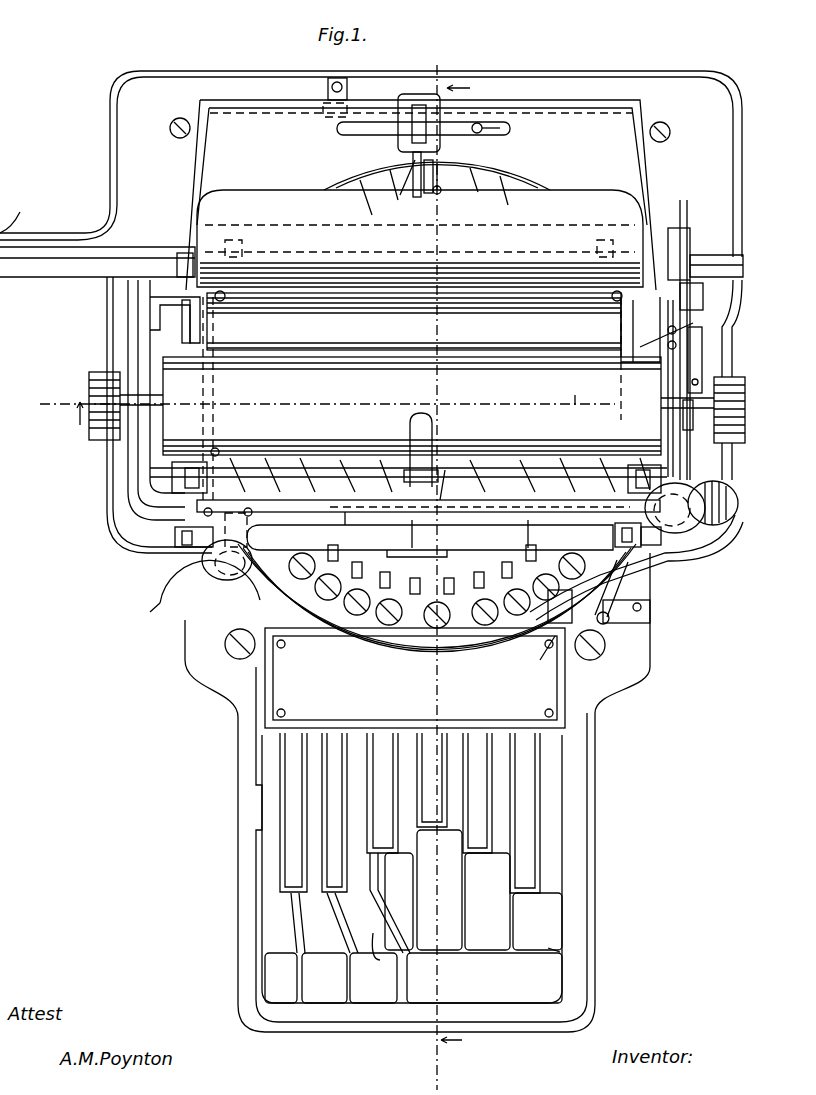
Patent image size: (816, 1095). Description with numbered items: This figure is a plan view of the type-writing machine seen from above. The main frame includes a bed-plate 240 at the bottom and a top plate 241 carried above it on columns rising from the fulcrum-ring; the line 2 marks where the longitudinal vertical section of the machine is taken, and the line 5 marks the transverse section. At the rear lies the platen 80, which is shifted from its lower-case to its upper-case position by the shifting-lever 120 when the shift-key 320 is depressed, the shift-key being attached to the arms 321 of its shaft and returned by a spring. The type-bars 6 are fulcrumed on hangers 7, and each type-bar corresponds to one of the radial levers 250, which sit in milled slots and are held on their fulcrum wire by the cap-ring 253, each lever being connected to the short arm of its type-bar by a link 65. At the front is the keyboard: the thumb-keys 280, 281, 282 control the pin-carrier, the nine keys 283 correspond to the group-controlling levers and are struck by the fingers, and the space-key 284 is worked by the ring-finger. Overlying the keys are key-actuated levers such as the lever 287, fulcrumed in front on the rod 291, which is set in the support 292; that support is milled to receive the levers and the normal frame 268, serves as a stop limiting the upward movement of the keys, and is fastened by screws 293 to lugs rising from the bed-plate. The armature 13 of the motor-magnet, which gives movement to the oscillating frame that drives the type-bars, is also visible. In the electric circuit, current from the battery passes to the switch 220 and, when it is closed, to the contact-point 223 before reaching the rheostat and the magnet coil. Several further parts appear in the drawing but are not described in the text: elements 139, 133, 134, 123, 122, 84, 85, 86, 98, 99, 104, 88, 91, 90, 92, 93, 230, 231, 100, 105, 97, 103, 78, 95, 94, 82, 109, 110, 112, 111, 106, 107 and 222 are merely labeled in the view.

The top plate 241 is at (160, 92).
The section line 2 is at (436, 567).
The carriage housing wall 139 is at (200, 162).
The paper guide rod 133 is at (400, 120).
The guide block 134 is at (428, 117).
The shifting-lever 120 is at (434, 168).
The link 123 is at (405, 172).
The pivot 122 is at (441, 194).
The paper table 84 is at (604, 255).
The carriage rail 85 is at (128, 262).
The rail end 86 is at (2, 232).
The platen knob 98 is at (684, 228).
The bracket 99 is at (690, 243).
The block 104 is at (672, 296).
The platen 80 is at (385, 341).
The platen cylinder 88 is at (268, 352).
The section line 5 is at (313, 406).
The hook 91 is at (180, 324).
The plate 90 is at (195, 345).
The end plate 92 is at (212, 355).
The pin 93 is at (219, 450).
The bracket 230 is at (630, 346).
The pin 231 is at (640, 332).
The arm 100 is at (640, 348).
The pin 105 is at (671, 348).
The bar 97 is at (688, 396).
The lug 103 is at (683, 410).
The ribbon vibrator 78 is at (433, 436).
The rail 95 is at (476, 465).
The bracket 94 is at (200, 494).
The side frame 82 is at (135, 490).
The radial levers 250 is at (342, 500).
The cap-ring 253 is at (455, 480).
The link 109 is at (415, 548).
The link 110 is at (530, 546).
The type-bars 6 is at (346, 545).
The link 65 is at (419, 531).
The hangers 7 is at (417, 540).
The bracket 112 is at (612, 540).
The pin 111 is at (180, 538).
The rod 291 is at (213, 570).
The ball 106 is at (682, 524).
The ball 107 is at (718, 526).
The bed-plate 240 is at (240, 750).
The armature 13 is at (185, 622).
The key-actuated lever 287 is at (256, 604).
The support 292 is at (287, 636).
The normal frame 268 is at (553, 636).
The screws 293 is at (240, 648).
The switch 220 is at (625, 588).
The pivot 222 is at (606, 624).
The contact-point 223 is at (655, 612).
The keys 283 is at (395, 838).
The space-key 284 is at (478, 850).
The key 280 is at (372, 1010).
The key 281 is at (325, 1010).
The key 282 is at (273, 1010).
The shift-key 320 is at (473, 1005).
The arms 321 is at (383, 940).